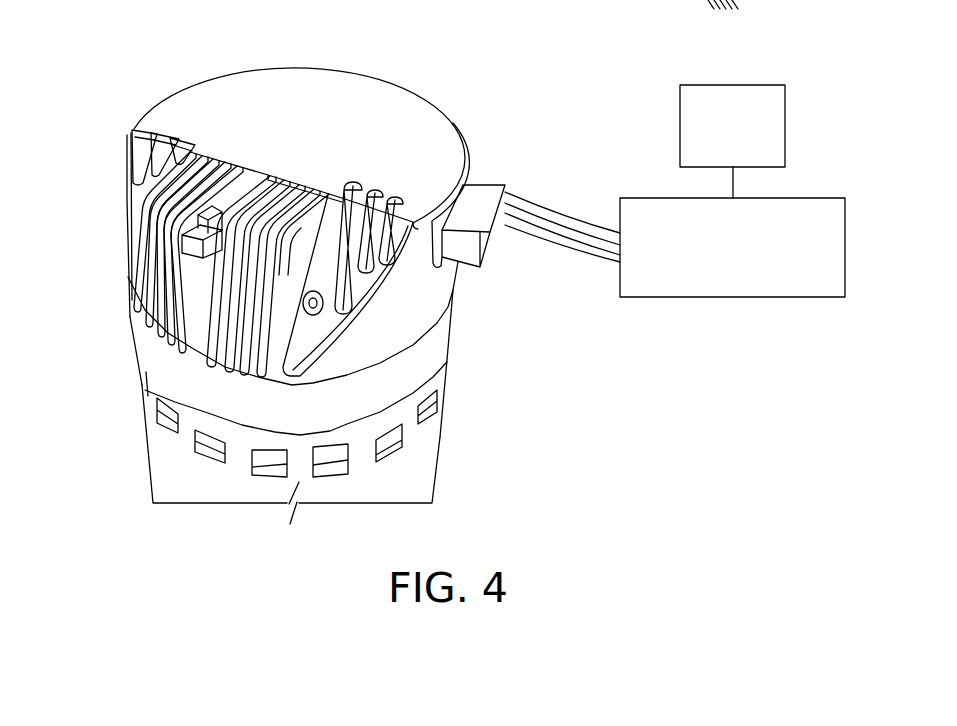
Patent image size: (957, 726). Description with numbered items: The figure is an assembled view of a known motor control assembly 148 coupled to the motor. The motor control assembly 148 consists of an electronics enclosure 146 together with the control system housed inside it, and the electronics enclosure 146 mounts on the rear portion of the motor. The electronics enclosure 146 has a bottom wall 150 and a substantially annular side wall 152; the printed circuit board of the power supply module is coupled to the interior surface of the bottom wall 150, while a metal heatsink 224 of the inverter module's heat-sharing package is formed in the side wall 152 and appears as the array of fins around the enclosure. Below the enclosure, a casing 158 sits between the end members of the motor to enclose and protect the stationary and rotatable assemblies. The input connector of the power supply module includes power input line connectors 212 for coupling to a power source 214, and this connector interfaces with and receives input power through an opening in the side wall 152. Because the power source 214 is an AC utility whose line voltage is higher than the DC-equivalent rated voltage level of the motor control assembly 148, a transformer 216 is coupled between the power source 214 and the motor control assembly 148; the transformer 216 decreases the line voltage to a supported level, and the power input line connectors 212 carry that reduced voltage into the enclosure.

The electronics enclosure 146 is at (170, 98).
The motor control assembly 148 is at (287, 47).
The bottom wall 150 is at (407, 107).
The side wall 152 is at (423, 300).
The casing 158 is at (148, 447).
The power input line connectors 212 is at (543, 210).
The power source 214 is at (785, 118).
The transformer 216 is at (803, 198).
The metal heatsink 224 is at (140, 213).